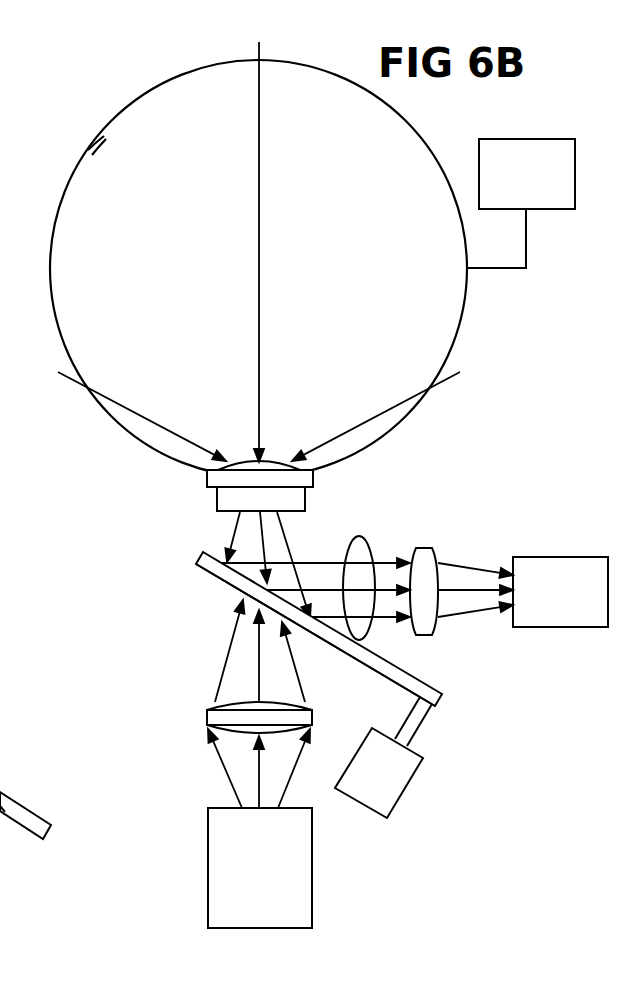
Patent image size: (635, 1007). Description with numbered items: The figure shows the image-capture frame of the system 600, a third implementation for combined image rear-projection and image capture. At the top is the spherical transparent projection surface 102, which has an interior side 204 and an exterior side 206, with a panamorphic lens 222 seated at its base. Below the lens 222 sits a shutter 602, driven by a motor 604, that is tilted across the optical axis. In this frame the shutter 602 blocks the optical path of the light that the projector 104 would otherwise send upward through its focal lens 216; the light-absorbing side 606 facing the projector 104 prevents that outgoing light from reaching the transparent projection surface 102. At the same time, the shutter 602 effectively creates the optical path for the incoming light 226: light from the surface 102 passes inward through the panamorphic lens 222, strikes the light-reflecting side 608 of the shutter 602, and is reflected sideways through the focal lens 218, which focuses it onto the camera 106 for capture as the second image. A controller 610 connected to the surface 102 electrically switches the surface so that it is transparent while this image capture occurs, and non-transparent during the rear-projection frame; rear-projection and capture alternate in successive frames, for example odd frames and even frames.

The transparent projection surface 102 is at (59, 328).
The projector 104 is at (208, 852).
The camera 106 is at (528, 630).
The interior side 204 is at (112, 151).
The exterior side 206 is at (84, 139).
The focal lens 216 is at (207, 720).
The focal lens 218 is at (422, 548).
The panamorphic lens 222 is at (209, 487).
The incoming light 226 is at (366, 538).
The system 600 is at (483, 833).
The shutter 602 is at (207, 567).
The motor 604 is at (402, 797).
The light-absorbing side 606 is at (322, 641).
The light-reflecting side 608 is at (421, 682).
The controller 610 is at (553, 211).